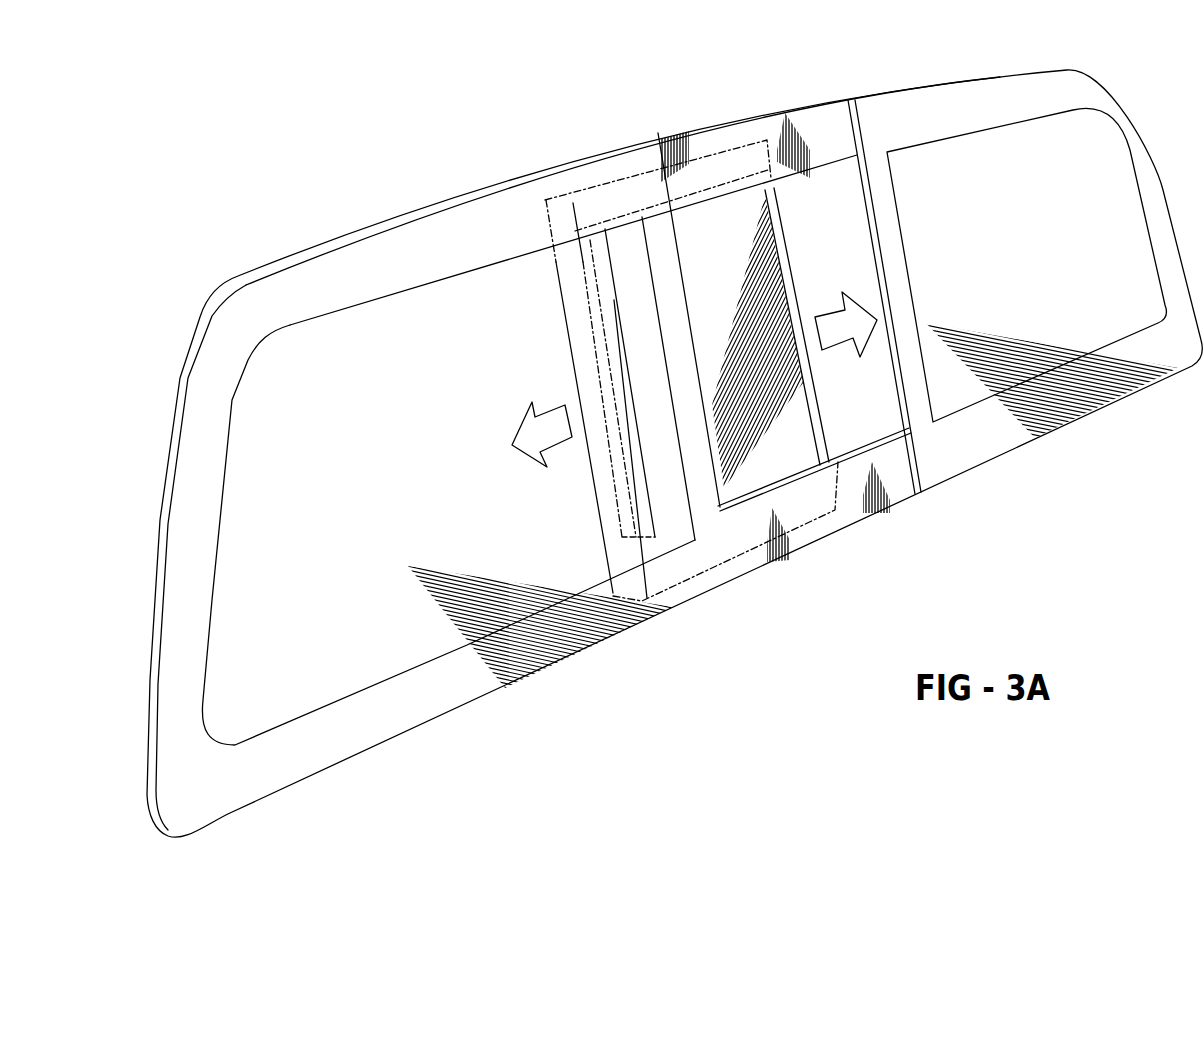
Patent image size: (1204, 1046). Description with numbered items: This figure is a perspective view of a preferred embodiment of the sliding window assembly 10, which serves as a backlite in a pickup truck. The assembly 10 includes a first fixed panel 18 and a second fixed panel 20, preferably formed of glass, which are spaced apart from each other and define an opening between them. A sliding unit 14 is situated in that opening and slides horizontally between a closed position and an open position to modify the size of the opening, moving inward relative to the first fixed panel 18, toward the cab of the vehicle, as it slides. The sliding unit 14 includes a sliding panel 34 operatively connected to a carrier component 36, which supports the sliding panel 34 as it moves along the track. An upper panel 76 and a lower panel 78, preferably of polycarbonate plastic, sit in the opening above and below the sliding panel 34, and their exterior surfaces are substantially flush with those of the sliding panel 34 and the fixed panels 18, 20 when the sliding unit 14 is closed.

The sliding window assembly 10 is at (743, 99).
The sliding unit 14 is at (806, 268).
The first fixed panel 18 is at (451, 541).
The second fixed panel 20 is at (1043, 304).
The sliding panel 34 is at (781, 336).
The carrier component 36 is at (828, 449).
The upper panel 76 is at (671, 134).
The lower panel 78 is at (790, 558).